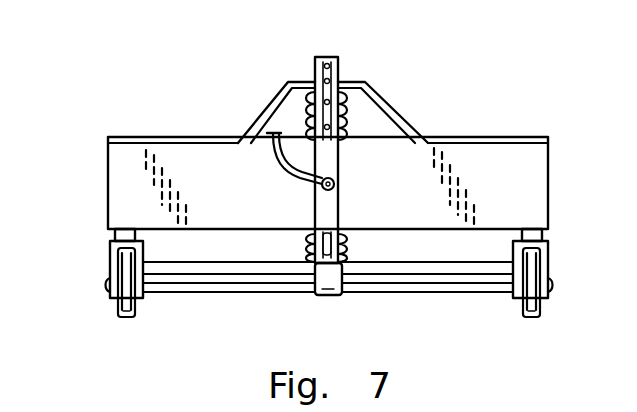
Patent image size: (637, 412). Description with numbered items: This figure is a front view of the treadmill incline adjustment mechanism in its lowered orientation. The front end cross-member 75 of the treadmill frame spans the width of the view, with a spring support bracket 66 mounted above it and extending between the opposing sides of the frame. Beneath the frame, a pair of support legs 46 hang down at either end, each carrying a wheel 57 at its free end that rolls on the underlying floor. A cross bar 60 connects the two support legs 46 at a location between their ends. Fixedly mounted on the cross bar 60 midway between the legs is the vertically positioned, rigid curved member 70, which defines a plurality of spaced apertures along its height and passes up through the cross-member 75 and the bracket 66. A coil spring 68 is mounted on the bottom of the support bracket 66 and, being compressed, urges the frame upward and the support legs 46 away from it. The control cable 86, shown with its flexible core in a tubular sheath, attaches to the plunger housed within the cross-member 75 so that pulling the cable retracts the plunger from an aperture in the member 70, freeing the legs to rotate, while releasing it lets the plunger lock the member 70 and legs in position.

The support leg 46 is at (110, 243).
The wheel 57 is at (126, 318).
The cross bar 60 is at (263, 293).
The spring support bracket 66 is at (272, 100).
The coil spring 68 is at (350, 117).
The curved member 70 is at (341, 71).
The front end cross-member 75 is at (229, 198).
The control cable 86 is at (303, 173).